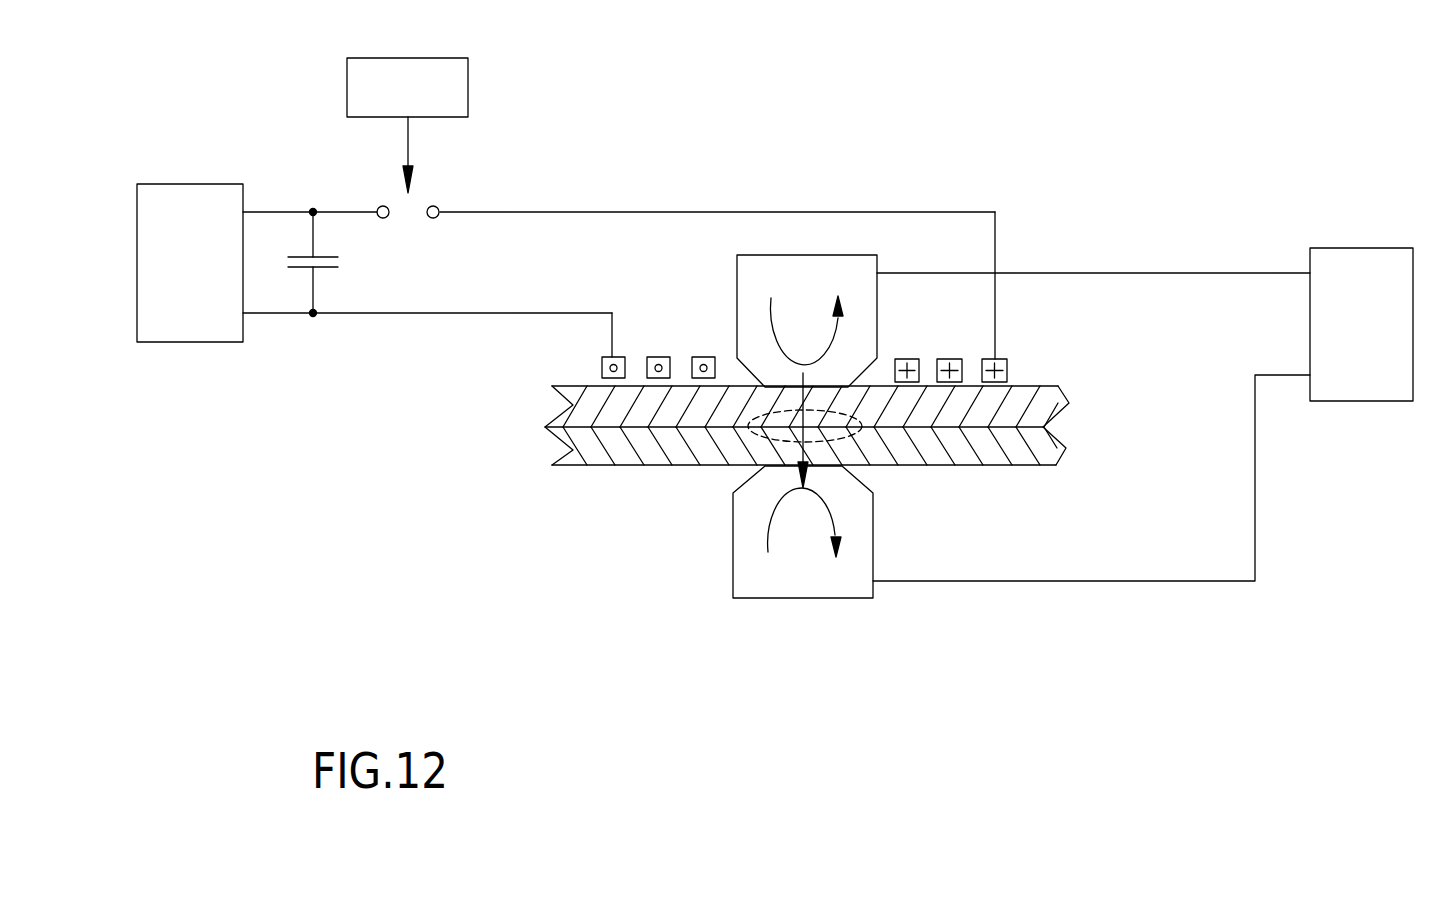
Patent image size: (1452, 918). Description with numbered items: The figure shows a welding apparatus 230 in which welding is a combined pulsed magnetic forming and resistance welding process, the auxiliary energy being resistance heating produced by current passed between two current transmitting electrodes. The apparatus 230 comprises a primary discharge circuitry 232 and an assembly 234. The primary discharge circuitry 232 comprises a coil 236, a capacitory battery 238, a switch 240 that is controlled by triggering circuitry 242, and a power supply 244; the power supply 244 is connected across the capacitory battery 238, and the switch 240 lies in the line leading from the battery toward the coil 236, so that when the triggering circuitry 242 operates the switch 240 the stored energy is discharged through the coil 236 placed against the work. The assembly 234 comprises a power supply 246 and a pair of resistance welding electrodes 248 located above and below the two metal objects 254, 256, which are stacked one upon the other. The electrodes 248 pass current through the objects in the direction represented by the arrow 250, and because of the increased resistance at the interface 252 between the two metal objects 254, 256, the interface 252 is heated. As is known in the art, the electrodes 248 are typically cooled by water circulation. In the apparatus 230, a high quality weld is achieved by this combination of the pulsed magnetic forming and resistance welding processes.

The apparatus 230 is at (468, 531).
The primary discharge circuitry 232 is at (570, 227).
The assembly 234 is at (1182, 539).
The coil 236 is at (615, 358).
The capacitory battery 238 is at (323, 265).
The switch 240 is at (410, 213).
The triggering circuitry 242 is at (462, 93).
The power supply 244 is at (204, 342).
The power supply 246 is at (1353, 388).
The resistance welding electrodes 248 is at (743, 273).
The arrow 250 is at (793, 473).
The interface 252 is at (750, 448).
The metal object 254 is at (550, 435).
The metal object 256 is at (572, 403).